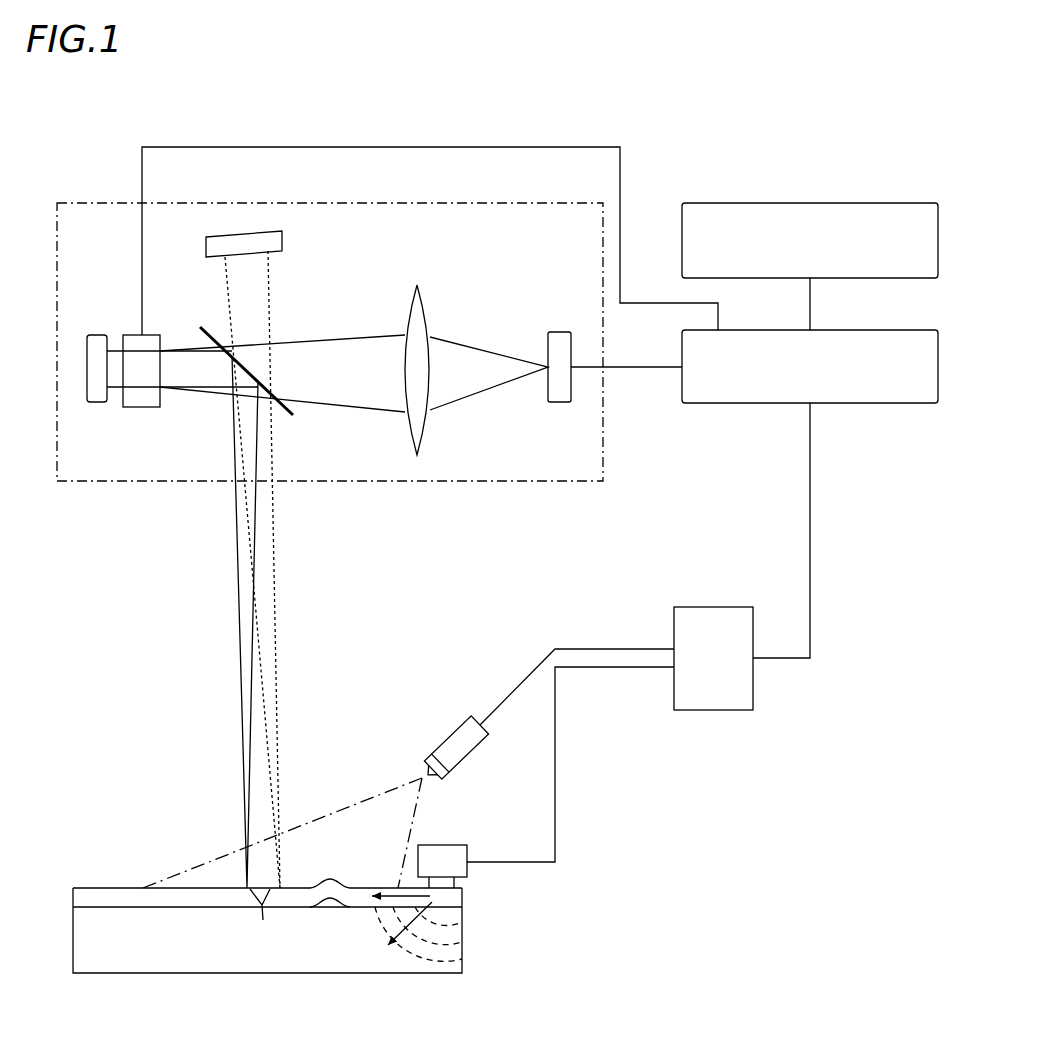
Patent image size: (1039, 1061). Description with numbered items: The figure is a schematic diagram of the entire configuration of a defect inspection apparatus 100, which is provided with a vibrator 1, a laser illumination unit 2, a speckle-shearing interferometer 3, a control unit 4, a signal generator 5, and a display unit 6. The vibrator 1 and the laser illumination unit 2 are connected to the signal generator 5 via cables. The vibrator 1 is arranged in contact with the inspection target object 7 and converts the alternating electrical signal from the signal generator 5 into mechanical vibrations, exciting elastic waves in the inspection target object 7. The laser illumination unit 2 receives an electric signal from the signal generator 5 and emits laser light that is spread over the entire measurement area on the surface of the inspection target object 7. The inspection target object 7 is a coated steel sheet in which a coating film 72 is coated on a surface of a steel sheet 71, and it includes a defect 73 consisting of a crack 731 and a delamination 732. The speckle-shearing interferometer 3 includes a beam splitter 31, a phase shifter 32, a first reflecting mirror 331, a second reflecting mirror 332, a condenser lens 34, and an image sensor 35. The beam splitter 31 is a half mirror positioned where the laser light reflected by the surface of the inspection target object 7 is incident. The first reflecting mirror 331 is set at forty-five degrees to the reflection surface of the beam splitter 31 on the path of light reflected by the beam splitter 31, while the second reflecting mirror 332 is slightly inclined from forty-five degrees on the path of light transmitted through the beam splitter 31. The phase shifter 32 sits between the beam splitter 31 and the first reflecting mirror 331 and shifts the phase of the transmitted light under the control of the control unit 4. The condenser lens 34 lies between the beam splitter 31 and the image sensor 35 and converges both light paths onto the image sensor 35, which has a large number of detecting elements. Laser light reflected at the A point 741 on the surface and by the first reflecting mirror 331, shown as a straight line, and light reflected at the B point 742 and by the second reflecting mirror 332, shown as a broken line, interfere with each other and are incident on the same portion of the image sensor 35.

The defect inspection apparatus 100 is at (878, 168).
The vibrator 1 is at (468, 858).
The laser illumination unit 2 is at (442, 737).
The speckle-shearing interferometer 3 is at (455, 482).
The beam splitter 31 is at (289, 416).
The phase shifter 32 is at (140, 407).
The first reflecting mirror 331 is at (96, 335).
The second reflecting mirror 332 is at (283, 243).
The condenser lens 34 is at (425, 430).
The image sensor 35 is at (556, 333).
The control unit 4 is at (682, 350).
The signal generator 5 is at (753, 700).
The display unit 6 is at (682, 222).
The inspection target object 7 is at (242, 905).
The steel sheet 71 is at (73, 940).
The coating film 72 is at (73, 897).
The defect 73 is at (252, 929).
The crack 731 is at (263, 912).
The delamination 732 is at (322, 901).
The A point 741 is at (244, 878).
The B point 742 is at (285, 886).